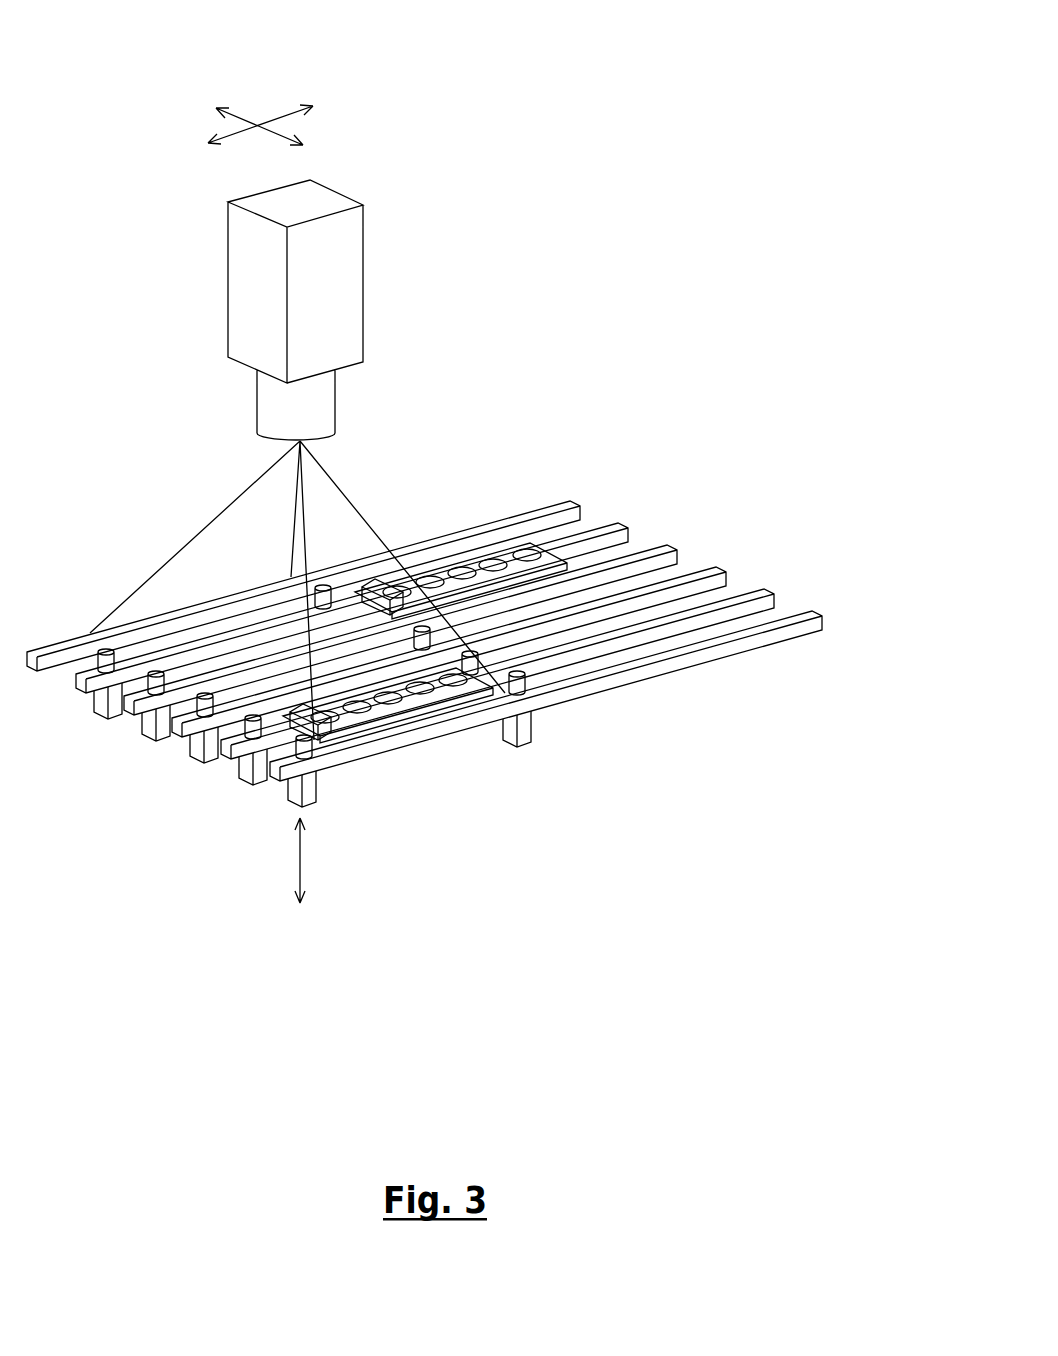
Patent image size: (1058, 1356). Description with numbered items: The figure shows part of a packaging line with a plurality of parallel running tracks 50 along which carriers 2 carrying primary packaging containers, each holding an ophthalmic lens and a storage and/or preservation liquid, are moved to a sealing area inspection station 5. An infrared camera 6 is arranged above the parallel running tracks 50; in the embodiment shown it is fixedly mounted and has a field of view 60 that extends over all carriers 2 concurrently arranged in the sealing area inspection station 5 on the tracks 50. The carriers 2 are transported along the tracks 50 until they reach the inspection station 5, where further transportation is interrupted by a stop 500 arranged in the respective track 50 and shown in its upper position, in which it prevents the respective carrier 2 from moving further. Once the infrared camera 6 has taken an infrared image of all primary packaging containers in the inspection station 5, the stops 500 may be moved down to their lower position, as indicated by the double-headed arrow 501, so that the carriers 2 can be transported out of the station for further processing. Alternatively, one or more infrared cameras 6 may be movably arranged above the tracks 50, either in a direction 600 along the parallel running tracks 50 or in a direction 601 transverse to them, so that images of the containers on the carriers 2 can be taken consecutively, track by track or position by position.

The carrier 2 is at (470, 560).
The sealing area inspection station 5 is at (468, 757).
The infrared camera 6 is at (245, 265).
The parallel running track 50 is at (788, 594).
The field of view 60 is at (225, 557).
The stop 500 is at (275, 742).
The double-headed arrow 501 is at (297, 855).
The direction along the parallel running tracks 600 is at (277, 117).
The direction transverse to the parallel running tracks 601 is at (245, 117).